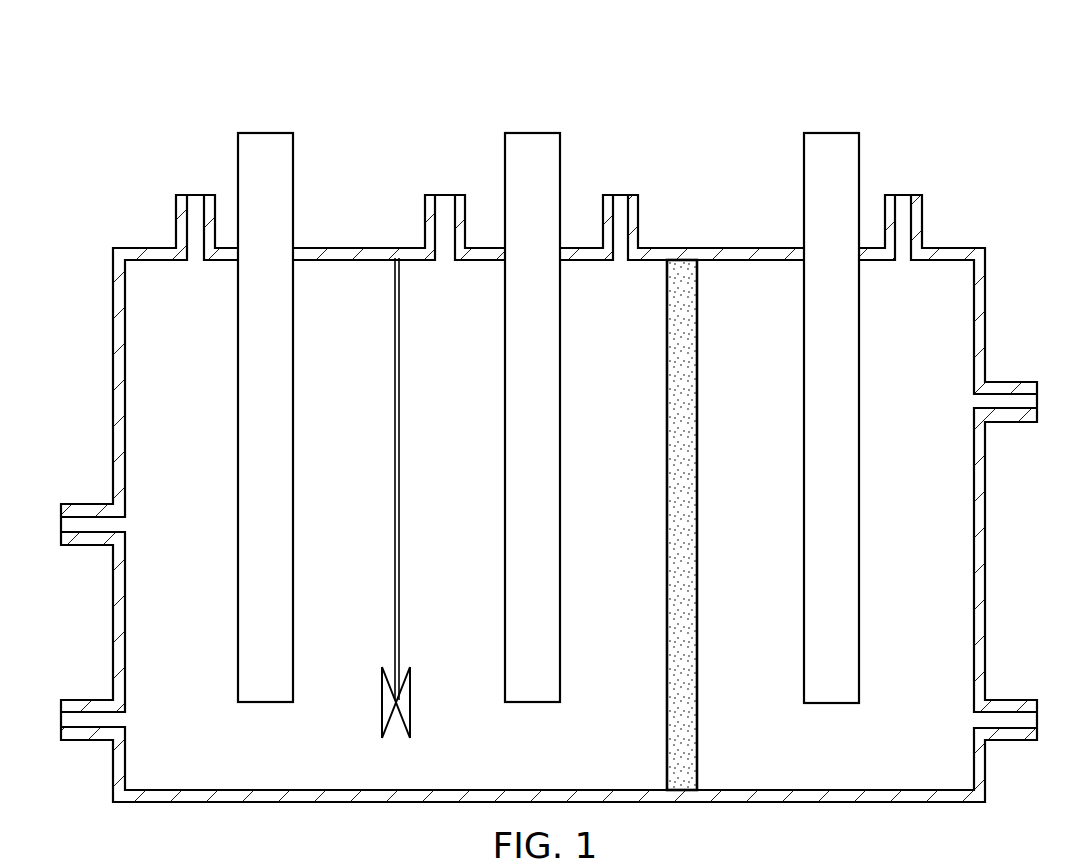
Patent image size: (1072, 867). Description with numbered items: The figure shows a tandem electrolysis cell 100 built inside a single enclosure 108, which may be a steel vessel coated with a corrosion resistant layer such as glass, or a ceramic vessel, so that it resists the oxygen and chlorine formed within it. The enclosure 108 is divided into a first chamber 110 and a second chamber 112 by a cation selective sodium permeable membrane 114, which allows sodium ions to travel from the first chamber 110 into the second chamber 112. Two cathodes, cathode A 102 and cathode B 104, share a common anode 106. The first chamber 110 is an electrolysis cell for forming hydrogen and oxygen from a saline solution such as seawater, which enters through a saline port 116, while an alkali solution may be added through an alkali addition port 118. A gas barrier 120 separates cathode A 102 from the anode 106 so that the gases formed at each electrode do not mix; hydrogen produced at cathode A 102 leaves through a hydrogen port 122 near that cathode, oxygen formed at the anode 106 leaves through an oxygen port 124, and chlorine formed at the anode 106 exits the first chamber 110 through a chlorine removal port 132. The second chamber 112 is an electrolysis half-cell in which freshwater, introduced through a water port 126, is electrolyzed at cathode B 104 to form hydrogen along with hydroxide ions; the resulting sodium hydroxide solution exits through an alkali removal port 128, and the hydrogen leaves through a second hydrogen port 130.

The tandem electrolysis cell 100 is at (124, 92).
The cathode A 102 is at (265, 132).
The cathode B 104 is at (832, 132).
The anode 106 is at (530, 132).
The enclosure 108 is at (113, 345).
The first chamber 110 is at (191, 793).
The second chamber 112 is at (906, 793).
The sodium permeable membrane 114 is at (698, 728).
The saline port 116 is at (73, 740).
The alkali addition port 118 is at (76, 504).
The gas barrier 120 is at (382, 706).
The hydrogen port 122 is at (176, 213).
The oxygen port 124 is at (425, 223).
The water port 126 is at (1015, 382).
The alkali removal port 128 is at (1005, 740).
The second hydrogen port 130 is at (922, 220).
The chlorine removal port 132 is at (638, 216).